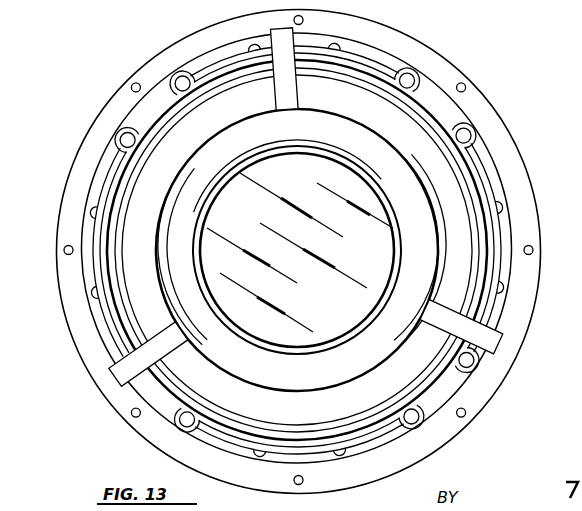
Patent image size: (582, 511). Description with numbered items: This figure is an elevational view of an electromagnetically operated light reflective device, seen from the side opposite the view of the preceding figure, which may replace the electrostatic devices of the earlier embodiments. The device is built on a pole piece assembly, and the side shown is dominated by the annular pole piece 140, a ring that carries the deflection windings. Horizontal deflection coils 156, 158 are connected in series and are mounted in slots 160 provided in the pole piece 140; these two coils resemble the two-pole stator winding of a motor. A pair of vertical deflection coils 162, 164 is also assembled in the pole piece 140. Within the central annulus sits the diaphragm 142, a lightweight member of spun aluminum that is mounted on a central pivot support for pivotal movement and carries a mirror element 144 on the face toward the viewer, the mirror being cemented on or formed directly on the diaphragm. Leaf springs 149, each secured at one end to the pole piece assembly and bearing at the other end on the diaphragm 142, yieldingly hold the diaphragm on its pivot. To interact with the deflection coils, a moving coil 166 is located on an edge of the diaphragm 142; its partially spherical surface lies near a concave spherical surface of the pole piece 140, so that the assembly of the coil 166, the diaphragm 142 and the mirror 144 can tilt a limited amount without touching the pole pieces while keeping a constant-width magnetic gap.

The annular pole piece 140 is at (518, 147).
The diaphragm 142 is at (433, 213).
The mirror element 144 is at (274, 334).
The leaf springs 149 is at (292, 110).
The horizontal deflection coil 156 is at (362, 62).
The horizontal deflection coil 158 is at (207, 432).
The slots 160 is at (176, 78).
The vertical deflection coil 162 is at (498, 240).
The vertical deflection coil 164 is at (115, 175).
The moving coil 166 is at (167, 377).